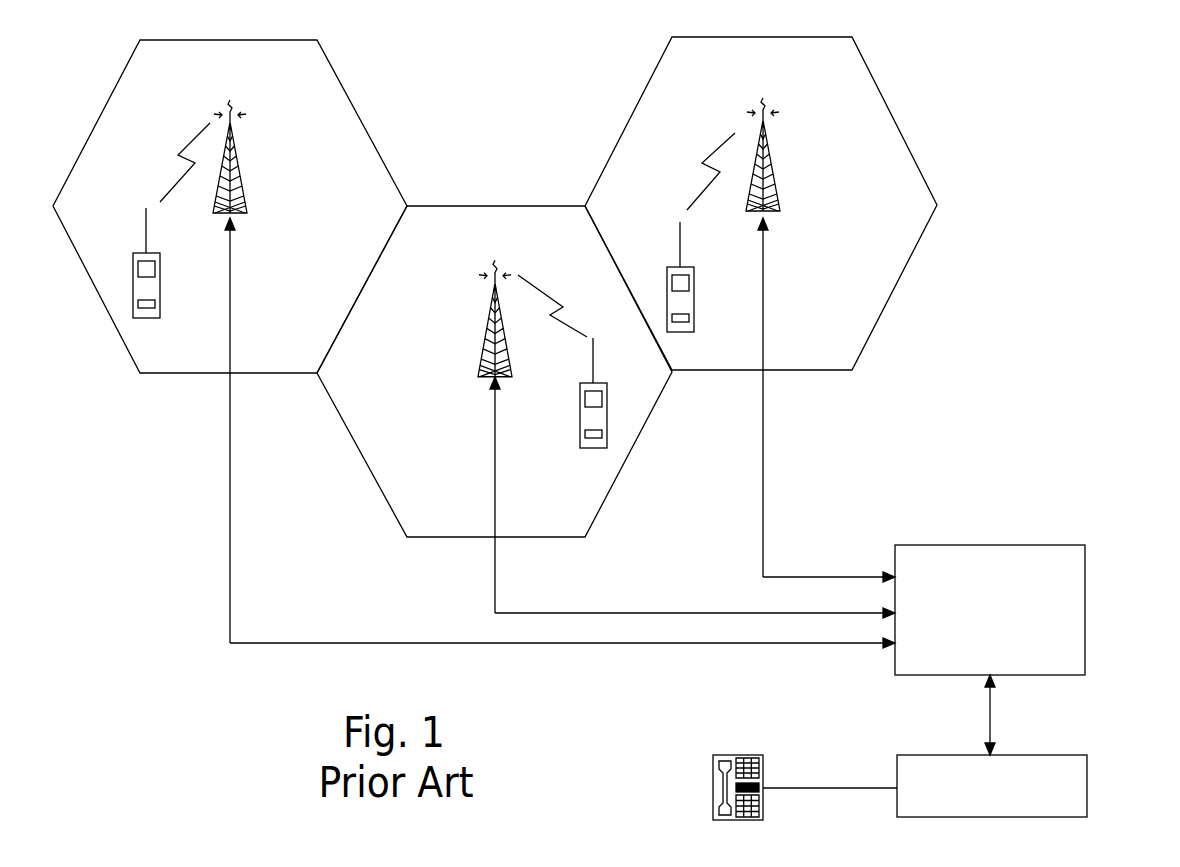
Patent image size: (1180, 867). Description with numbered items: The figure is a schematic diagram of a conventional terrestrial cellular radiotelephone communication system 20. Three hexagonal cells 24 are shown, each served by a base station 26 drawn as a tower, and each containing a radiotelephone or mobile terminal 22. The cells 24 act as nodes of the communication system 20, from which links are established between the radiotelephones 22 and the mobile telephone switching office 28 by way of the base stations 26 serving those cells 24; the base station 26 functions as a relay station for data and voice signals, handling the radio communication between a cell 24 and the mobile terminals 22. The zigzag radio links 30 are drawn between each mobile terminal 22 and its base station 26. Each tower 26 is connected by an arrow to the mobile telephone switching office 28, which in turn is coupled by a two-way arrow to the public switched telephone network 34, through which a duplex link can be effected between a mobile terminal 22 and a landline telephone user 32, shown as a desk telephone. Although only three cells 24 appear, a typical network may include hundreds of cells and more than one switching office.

The terrestrial cellular radiotelephone communication system 20 is at (1096, 137).
The radiotelephone 22 is at (160, 292).
The cell 24 is at (888, 297).
The base station 26 is at (252, 162).
The mobile telephone switching office 28 is at (990, 545).
The radio link 30 is at (569, 294).
The landline telephone user 32 is at (713, 787).
The public switched telephone network 34 is at (1087, 783).